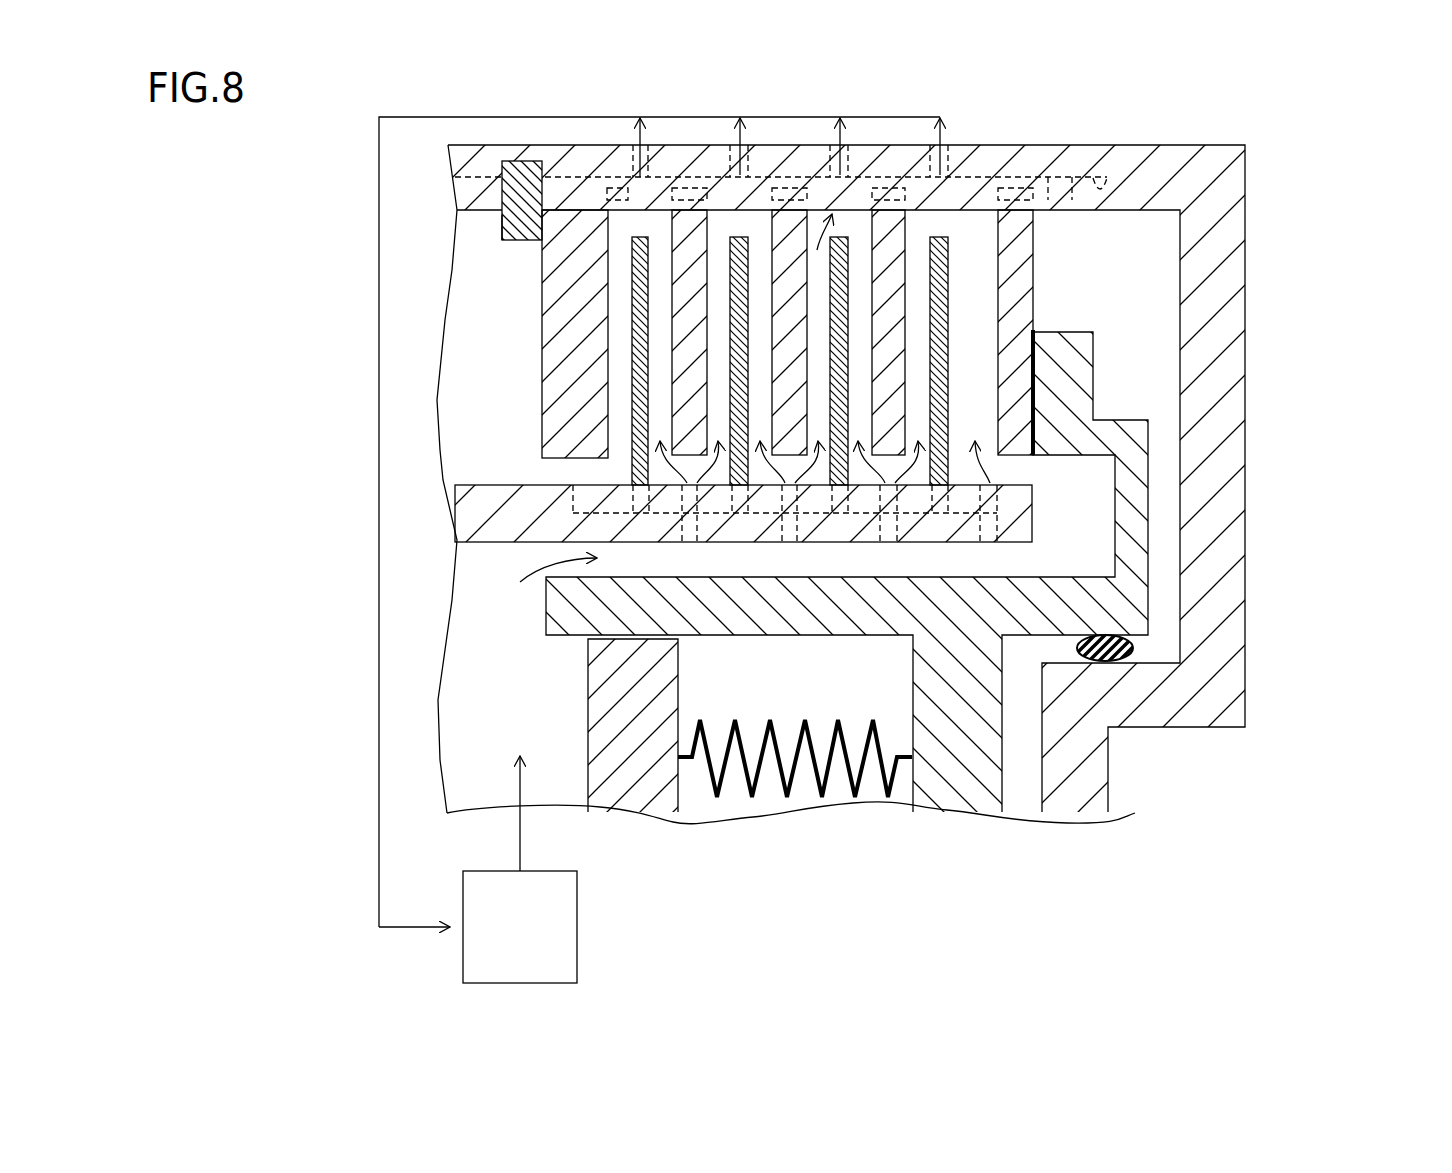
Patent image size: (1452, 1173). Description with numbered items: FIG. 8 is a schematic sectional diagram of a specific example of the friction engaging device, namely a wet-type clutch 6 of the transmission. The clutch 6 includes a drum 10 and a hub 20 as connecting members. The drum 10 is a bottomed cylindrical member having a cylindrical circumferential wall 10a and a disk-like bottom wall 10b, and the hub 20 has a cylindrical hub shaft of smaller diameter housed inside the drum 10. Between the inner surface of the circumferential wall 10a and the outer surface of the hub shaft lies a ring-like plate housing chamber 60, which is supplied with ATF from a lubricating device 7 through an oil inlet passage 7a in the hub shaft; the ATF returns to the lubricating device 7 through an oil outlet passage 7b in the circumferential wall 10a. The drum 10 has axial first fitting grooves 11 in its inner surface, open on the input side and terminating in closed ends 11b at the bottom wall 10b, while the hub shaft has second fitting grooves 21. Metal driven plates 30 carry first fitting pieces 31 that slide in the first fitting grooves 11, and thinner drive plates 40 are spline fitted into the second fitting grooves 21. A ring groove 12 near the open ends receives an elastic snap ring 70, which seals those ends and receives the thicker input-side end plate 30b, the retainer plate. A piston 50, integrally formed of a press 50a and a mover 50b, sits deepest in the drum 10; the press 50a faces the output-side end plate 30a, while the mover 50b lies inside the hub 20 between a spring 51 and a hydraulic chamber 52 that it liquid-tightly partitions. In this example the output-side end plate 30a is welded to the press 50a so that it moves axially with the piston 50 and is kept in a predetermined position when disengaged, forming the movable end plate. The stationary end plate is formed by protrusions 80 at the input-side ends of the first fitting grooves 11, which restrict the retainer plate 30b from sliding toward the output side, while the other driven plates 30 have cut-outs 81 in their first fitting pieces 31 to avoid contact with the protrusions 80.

The clutch 6 is at (1352, 105).
The lubricating device 7 is at (578, 935).
The oil inlet passage 7a is at (690, 542).
The oil outlet passage 7b is at (412, 117).
The drum 10 is at (927, 460).
The circumferential wall 10a is at (1176, 145).
The bottom wall 10b is at (1232, 450).
The first fitting grooves 11 is at (1075, 185).
The closed ends 11b is at (1100, 190).
The ring groove 12 is at (527, 160).
The hub 20 is at (487, 485).
The second fitting grooves 21 is at (1032, 500).
The driven plates 30 is at (706, 334).
The output-side end plate 30a is at (1018, 238).
The input-side end plate 30b is at (556, 276).
The first fitting pieces 31 is at (1048, 185).
The drive plates 40 is at (940, 236).
The piston 50 is at (857, 590).
The press 50a is at (1072, 366).
The mover 50b is at (958, 790).
The spring 51 is at (805, 790).
The hydraulic chamber 52 is at (1025, 784).
The plate housing chamber 60 is at (506, 318).
The snap ring 70 is at (502, 232).
The protrusions 80 is at (614, 196).
The cut-outs 81 is at (692, 185).